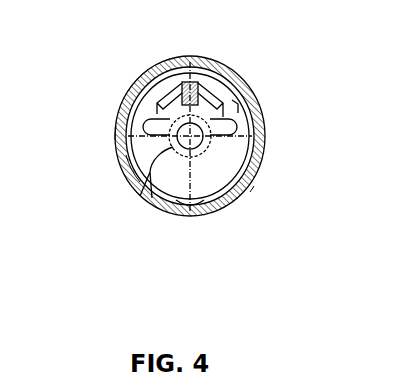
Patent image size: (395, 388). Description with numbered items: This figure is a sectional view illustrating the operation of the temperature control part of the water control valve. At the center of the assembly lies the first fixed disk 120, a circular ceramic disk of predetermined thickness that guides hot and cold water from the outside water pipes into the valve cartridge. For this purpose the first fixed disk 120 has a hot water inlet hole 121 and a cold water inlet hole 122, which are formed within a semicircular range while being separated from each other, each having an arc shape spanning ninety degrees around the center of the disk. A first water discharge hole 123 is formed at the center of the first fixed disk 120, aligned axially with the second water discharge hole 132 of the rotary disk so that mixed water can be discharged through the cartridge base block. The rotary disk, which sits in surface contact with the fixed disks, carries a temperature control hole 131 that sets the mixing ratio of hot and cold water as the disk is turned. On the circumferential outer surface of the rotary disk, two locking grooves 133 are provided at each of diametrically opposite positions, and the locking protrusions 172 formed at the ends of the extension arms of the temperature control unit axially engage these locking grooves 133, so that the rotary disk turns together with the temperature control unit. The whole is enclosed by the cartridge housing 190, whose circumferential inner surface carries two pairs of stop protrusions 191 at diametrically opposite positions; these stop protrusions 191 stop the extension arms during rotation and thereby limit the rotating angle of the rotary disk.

The first fixed disk 120 is at (196, 54).
The hot water inlet hole 121 is at (127, 94).
The cold water inlet hole 122 is at (252, 84).
The first water discharge hole 123 is at (150, 199).
The temperature control hole 131 is at (152, 80).
The second water discharge hole 132 is at (128, 220).
The locking grooves 133 is at (191, 220).
The locking protrusions 172 is at (182, 218).
The cartridge housing 190 is at (126, 155).
The stop protrusions 191 is at (114, 126).